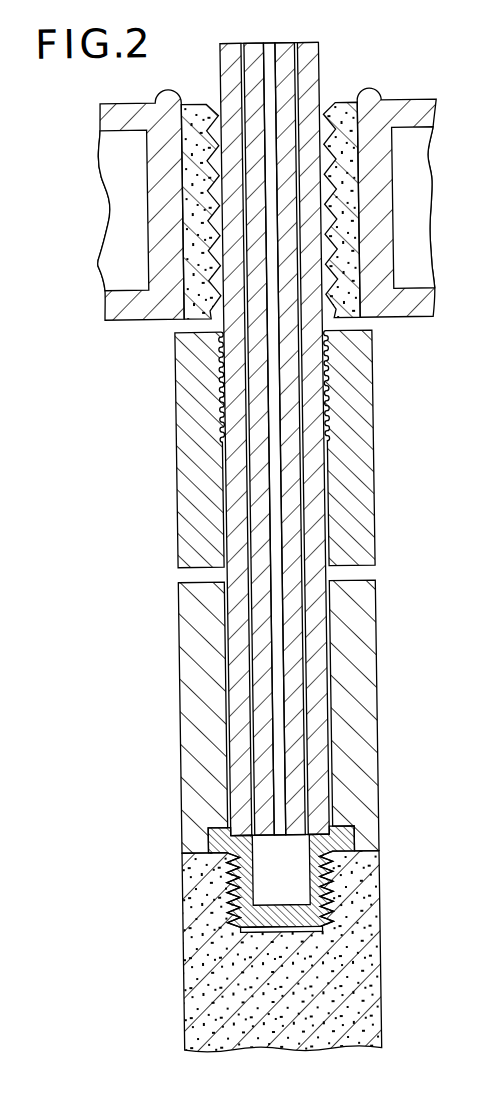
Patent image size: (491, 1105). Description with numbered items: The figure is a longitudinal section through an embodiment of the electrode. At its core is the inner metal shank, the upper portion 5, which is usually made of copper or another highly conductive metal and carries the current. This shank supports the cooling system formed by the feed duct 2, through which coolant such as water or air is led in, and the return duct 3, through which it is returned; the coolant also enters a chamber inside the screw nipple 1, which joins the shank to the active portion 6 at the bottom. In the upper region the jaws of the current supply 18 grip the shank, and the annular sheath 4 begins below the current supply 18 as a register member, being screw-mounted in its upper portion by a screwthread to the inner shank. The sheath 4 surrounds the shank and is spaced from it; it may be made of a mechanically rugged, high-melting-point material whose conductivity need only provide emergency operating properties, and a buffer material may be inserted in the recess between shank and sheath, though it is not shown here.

The screw nipple 1 is at (226, 888).
The feed duct 2 is at (248, 487).
The return duct 3 is at (276, 397).
The annular sheath 4 is at (364, 693).
The upper portion 5 is at (318, 43).
The active portion 6 is at (375, 981).
The current supply 18 is at (202, 106).